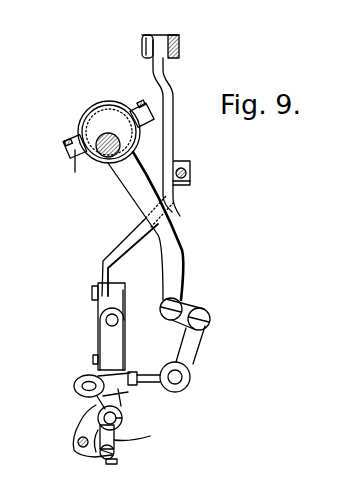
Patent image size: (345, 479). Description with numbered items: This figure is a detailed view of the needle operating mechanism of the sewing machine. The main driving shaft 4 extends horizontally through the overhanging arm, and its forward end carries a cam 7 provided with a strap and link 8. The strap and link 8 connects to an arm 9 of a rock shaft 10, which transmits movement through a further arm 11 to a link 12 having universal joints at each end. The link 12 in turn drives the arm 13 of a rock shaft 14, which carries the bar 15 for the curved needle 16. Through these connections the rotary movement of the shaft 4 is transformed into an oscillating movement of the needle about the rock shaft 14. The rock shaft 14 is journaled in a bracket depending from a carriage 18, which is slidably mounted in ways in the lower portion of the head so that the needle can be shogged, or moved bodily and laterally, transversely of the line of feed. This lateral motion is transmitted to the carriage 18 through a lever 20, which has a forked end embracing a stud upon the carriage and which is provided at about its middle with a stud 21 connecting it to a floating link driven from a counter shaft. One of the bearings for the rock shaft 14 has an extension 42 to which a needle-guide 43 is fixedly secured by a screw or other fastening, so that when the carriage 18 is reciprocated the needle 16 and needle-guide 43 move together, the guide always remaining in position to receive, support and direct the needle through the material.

The main driving shaft 4 is at (75, 165).
The cam 7 is at (96, 121).
The strap and link 8 is at (170, 229).
The arm 9 is at (186, 304).
The rock shaft 10 is at (208, 319).
The arm 11 is at (197, 346).
The link 12 is at (148, 375).
The arm 13 is at (92, 402).
The rock shaft 14 is at (122, 416).
The bar 15 is at (88, 428).
The curved needle 16 is at (113, 457).
The carriage 18 is at (107, 340).
The lever 20 is at (136, 233).
The stud 21 is at (191, 177).
The extension 42 is at (112, 433).
The needle-guide 43 is at (114, 447).